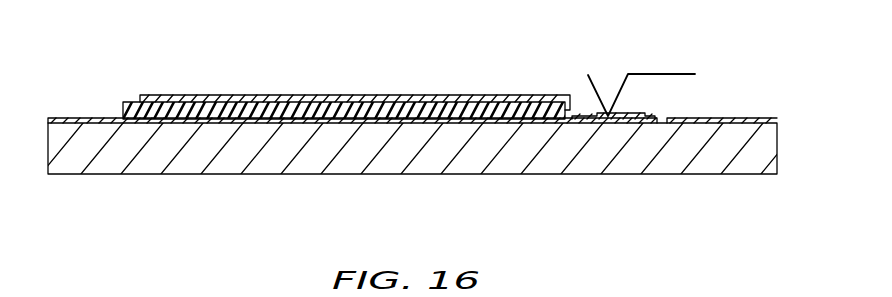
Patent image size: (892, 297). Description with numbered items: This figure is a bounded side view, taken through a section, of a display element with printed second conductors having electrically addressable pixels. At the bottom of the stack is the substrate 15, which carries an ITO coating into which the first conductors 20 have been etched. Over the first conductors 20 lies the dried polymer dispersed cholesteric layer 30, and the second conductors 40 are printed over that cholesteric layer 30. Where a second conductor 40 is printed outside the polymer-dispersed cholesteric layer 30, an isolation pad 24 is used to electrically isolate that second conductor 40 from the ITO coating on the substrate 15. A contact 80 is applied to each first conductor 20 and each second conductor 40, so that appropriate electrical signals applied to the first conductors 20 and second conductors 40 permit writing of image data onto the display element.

The substrate 15 is at (232, 153).
The first conductor 20 is at (382, 125).
The isolation pad 24 is at (597, 125).
The polymer dispersed cholesteric layer 30 is at (175, 95).
The second conductor 40 is at (418, 95).
The contact 80 is at (658, 74).